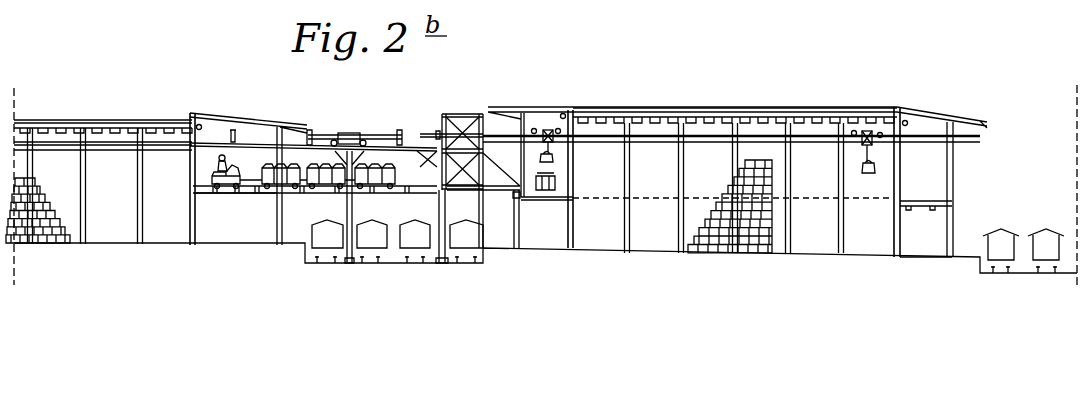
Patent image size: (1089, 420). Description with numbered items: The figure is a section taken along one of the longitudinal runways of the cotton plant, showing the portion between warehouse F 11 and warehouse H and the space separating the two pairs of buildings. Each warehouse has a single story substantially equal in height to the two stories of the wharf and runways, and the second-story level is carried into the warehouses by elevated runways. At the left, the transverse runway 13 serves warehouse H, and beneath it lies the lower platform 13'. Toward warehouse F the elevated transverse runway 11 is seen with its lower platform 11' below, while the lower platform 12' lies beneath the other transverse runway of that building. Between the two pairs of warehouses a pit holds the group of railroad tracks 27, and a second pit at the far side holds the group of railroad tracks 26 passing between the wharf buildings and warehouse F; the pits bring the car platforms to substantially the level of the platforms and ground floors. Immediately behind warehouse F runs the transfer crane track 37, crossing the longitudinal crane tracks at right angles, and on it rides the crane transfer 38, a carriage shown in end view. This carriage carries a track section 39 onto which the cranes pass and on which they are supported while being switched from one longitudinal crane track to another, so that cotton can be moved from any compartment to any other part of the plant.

The warehouse H is at (150, 107).
The warehouse F is at (755, 96).
The transverse runway 11 is at (926, 184).
The lower platform 11' is at (926, 244).
The lower platform 12' is at (543, 180).
The transverse runway 13 is at (315, 169).
The lower platform 13' is at (236, 214).
The group of railroad tracks 26 is at (1038, 273).
The group of railroad tracks 27 is at (318, 263).
The transfer crane track 37 is at (513, 198).
The crane transfer 38 is at (463, 142).
The track section 39 is at (438, 133).